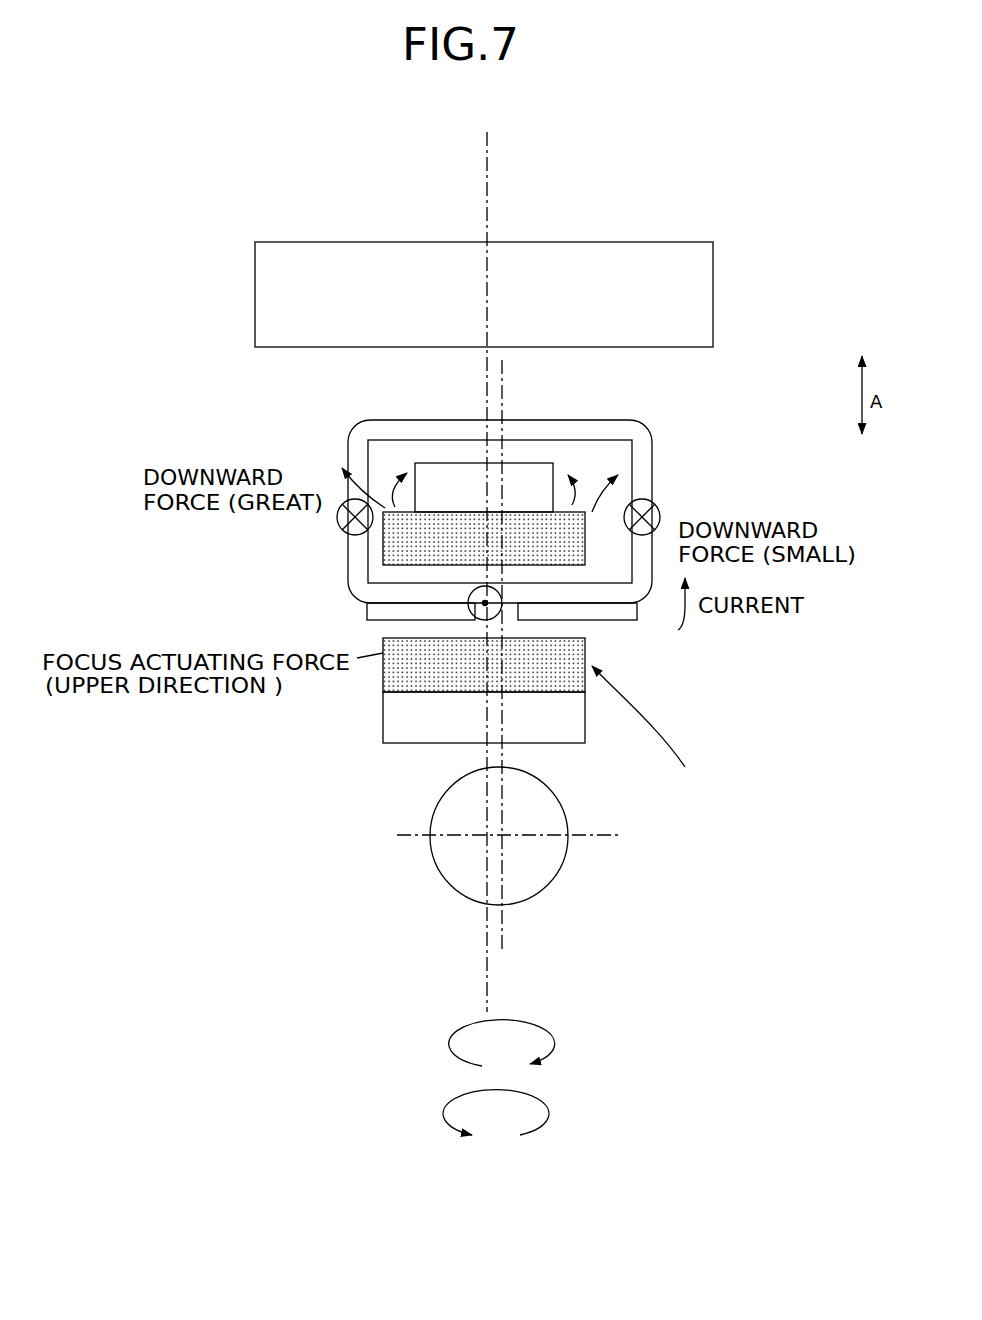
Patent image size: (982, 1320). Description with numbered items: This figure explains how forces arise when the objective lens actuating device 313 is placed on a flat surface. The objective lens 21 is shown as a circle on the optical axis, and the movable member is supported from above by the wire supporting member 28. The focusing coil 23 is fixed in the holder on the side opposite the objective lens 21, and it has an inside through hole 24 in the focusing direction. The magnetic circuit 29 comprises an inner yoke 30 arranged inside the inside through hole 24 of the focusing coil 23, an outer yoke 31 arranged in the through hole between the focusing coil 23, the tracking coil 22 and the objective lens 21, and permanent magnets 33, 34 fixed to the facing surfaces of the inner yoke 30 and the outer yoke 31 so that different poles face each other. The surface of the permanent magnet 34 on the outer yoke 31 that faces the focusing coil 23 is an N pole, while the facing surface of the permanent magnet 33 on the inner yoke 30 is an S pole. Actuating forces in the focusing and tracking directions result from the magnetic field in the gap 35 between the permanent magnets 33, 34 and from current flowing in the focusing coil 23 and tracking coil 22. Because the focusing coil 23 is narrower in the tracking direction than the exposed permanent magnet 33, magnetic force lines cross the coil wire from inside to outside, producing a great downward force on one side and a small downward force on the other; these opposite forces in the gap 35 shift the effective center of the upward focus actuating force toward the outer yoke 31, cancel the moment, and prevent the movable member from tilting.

The objective lens actuating device 313 is at (143, 228).
The wire supporting member 28 is at (593, 241).
The focusing coil 23 is at (640, 458).
The inside through hole 24 is at (598, 457).
The inner yoke 30 is at (452, 472).
The permanent magnet 33 is at (388, 548).
The tracking coil 22 is at (373, 610).
The permanent magnet 34 is at (380, 680).
The outer yoke 31 is at (405, 722).
The gap 35 is at (550, 632).
The magnetic circuit 29 is at (651, 734).
The objective lens 21 is at (538, 868).